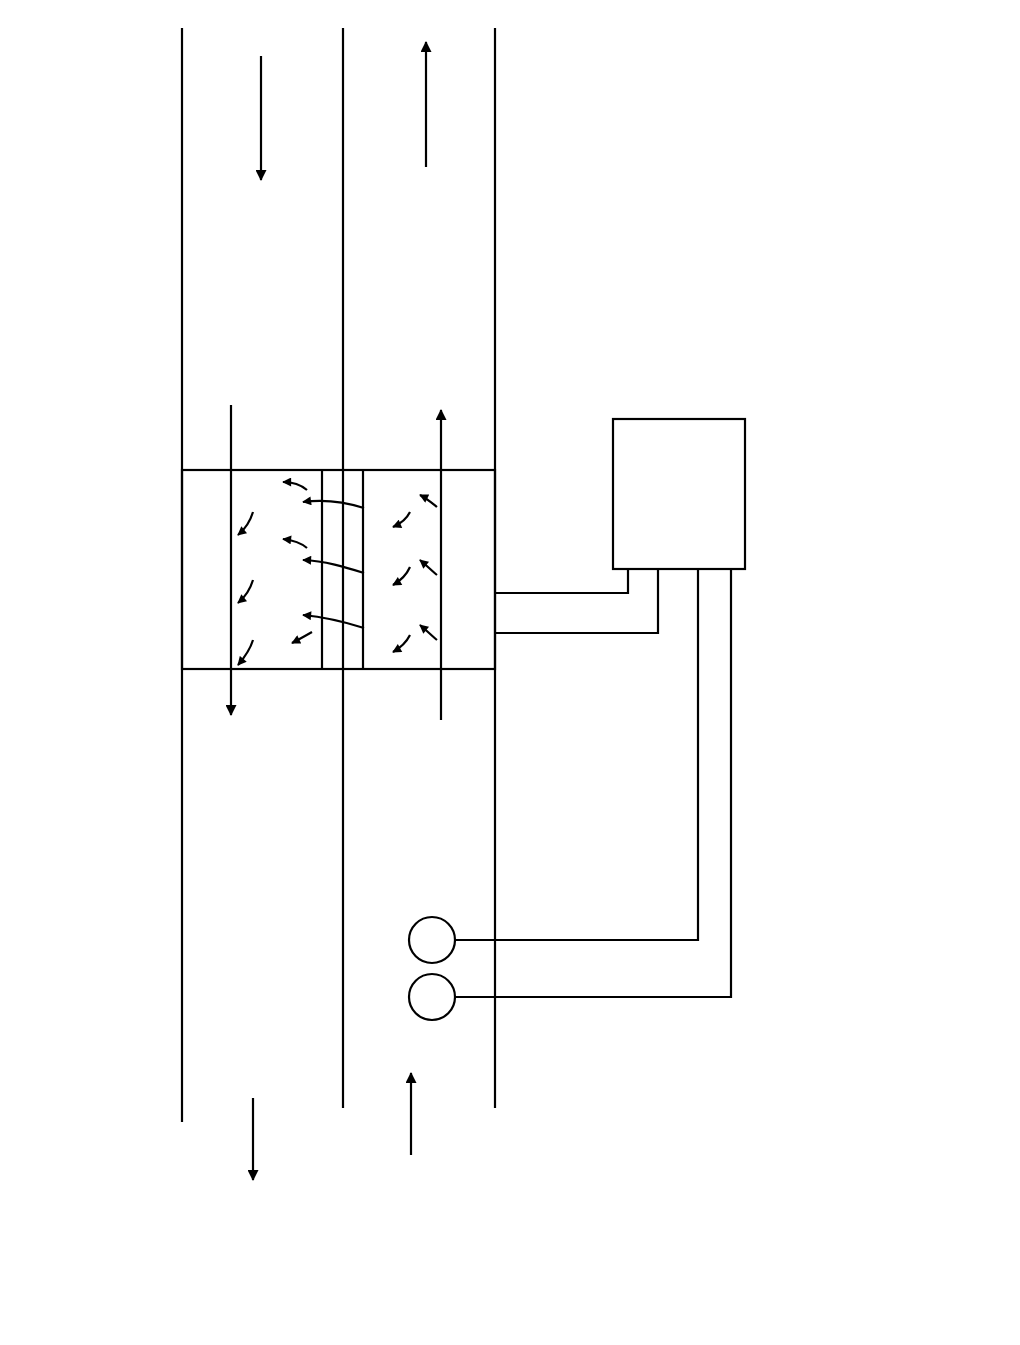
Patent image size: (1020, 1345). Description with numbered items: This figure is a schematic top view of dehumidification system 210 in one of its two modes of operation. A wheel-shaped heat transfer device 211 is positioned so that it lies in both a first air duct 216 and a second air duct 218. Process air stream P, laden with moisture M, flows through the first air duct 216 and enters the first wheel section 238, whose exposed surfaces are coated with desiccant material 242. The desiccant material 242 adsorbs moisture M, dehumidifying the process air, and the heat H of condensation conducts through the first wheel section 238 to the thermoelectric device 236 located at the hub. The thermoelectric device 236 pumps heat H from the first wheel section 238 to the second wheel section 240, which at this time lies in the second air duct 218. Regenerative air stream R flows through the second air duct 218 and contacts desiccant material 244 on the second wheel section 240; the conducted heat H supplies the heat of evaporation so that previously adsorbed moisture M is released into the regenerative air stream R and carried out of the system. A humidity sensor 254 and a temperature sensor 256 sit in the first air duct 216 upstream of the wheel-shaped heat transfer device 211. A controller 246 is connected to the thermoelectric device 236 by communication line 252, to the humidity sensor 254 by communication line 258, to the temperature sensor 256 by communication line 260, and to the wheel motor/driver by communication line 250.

The dehumidification system 210 is at (590, 108).
The wheel-shaped heat transfer device 211 is at (349, 540).
The first air duct 216 is at (457, 262).
The second air duct 218 is at (193, 161).
The thermoelectric device 236 is at (347, 487).
The first wheel section 238 is at (512, 399).
The second wheel section 240 is at (160, 431).
The desiccant material 242 is at (482, 647).
The desiccant material 244 is at (207, 537).
The controller 246 is at (668, 414).
The communication line 250 is at (598, 633).
The communication line 252 is at (578, 593).
The humidity sensor 254 is at (415, 922).
The temperature sensor 256 is at (415, 982).
The communication line 258 is at (699, 866).
The communication line 260 is at (645, 997).